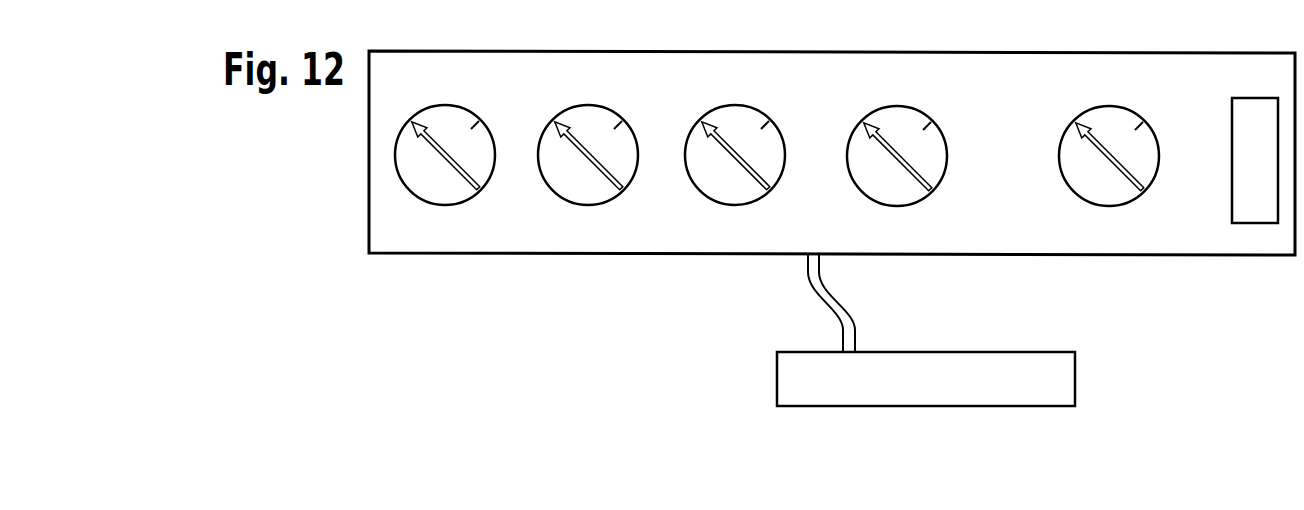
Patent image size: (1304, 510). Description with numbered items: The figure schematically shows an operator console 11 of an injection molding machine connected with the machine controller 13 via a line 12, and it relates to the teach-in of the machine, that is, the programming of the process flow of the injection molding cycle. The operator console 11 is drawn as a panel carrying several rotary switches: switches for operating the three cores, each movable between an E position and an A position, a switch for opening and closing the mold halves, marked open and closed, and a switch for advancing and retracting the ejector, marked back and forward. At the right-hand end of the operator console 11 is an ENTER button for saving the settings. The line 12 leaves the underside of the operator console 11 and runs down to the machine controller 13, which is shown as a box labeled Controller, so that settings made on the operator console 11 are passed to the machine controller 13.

The operator console 11 is at (1037, 240).
The line 12 is at (837, 308).
The machine controller 13 is at (1076, 381).